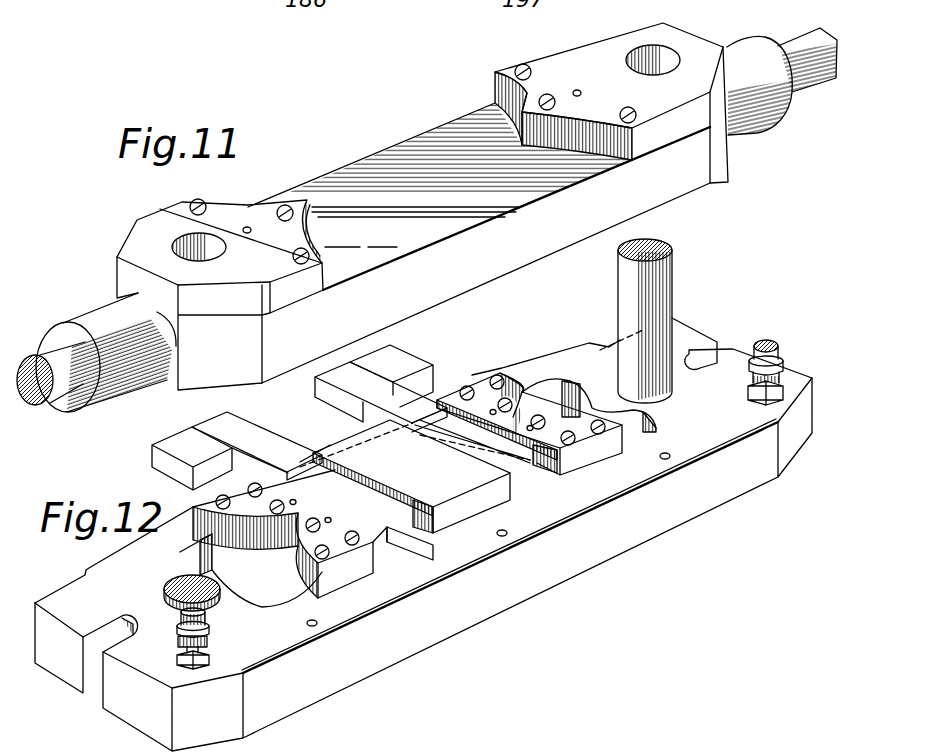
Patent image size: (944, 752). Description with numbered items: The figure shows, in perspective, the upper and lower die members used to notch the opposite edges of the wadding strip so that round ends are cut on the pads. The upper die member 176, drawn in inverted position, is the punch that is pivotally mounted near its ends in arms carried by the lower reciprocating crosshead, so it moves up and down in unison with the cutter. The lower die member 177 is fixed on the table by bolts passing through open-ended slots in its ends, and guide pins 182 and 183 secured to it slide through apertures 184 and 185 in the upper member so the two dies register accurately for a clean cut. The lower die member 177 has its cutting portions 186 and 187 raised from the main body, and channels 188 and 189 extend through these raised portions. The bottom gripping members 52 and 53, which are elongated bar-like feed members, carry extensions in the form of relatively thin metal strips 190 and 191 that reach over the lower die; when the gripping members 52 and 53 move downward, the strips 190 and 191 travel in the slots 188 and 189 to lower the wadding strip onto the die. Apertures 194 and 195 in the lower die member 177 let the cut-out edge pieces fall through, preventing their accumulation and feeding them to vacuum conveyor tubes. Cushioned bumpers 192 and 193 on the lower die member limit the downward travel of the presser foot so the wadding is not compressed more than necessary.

In FIG. 12, the lower gripping member 52 is at (183, 443).
In FIG. 12, the lower gripping member 53 is at (407, 360).
In FIG. 11, the upper die member 176 is at (370, 160).
In FIG. 12, the lower die member 177 is at (489, 588).
In FIG. 12, the guide pin 182 is at (190, 584).
In FIG. 12, the guide pin 183 is at (668, 287).
In FIG. 11, the aperture 184 is at (185, 236).
In FIG. 11, the aperture 185 is at (660, 52).
In FIG. 12, the cutting portion 186 is at (340, 545).
In FIG. 12, the cutting portion 187 is at (587, 437).
In FIG. 12, the channel 188 is at (407, 537).
In FIG. 12, the channel 189 is at (528, 478).
In FIG. 12, the thin metal strip 190 is at (278, 448).
In FIG. 12, the thin metal strip 191 is at (403, 402).
In FIG. 12, the cushioned bumper 192 is at (203, 610).
In FIG. 12, the cushioned bumper 193 is at (752, 365).
In FIG. 12, the aperture 194 is at (226, 558).
In FIG. 12, the aperture 195 is at (612, 411).